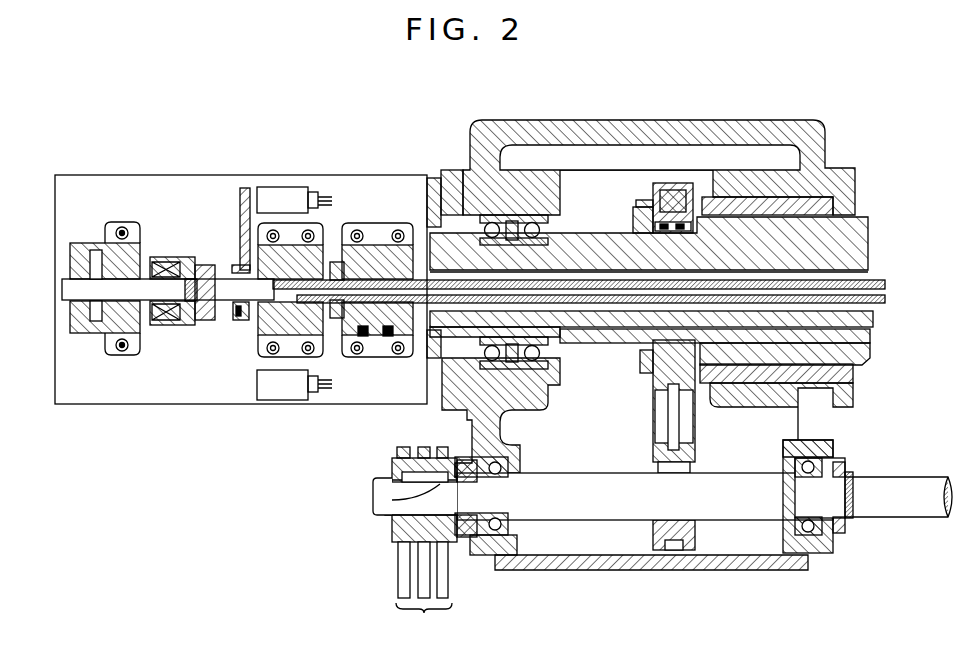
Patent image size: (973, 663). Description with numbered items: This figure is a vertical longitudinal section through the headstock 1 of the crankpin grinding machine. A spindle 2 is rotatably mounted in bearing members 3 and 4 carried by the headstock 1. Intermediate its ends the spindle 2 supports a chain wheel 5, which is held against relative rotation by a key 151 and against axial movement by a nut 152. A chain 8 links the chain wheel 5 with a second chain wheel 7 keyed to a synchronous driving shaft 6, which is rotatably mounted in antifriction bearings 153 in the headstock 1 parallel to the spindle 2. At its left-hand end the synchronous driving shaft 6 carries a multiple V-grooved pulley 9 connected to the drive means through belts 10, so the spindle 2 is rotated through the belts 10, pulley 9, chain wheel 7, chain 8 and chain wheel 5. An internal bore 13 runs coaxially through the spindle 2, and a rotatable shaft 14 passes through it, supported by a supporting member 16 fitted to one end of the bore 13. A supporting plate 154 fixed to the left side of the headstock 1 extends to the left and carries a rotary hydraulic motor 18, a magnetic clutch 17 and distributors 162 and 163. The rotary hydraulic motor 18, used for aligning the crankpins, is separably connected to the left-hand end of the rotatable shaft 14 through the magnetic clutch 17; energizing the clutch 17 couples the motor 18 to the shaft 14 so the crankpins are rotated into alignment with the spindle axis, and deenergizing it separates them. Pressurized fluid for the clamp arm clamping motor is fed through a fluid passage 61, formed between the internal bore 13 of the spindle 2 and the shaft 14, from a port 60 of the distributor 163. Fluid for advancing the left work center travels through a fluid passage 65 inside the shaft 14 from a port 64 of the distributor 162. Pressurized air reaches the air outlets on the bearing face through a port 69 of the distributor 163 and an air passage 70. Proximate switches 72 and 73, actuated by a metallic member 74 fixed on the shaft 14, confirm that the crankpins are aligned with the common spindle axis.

The headstock 1 is at (695, 122).
The spindle 2 is at (850, 246).
The bearing member 3 is at (773, 197).
The bearing member 4 is at (495, 222).
The chain wheel 5 is at (660, 186).
The synchronous driving shaft 6 is at (598, 485).
The chain wheel 7 is at (655, 530).
The chain 8 is at (690, 426).
The multiple V-grooved pulley 9 is at (392, 525).
The belts 10 is at (424, 589).
The internal bore 13 is at (868, 278).
The rotatable shaft 14 is at (582, 346).
The supporting member 16 is at (424, 245).
The magnetic clutch 17 is at (185, 262).
The rotary hydraulic motor 18 is at (95, 333).
The port 60 is at (363, 338).
The fluid passage 61 is at (573, 276).
The port 64 is at (248, 322).
The fluid passage 65 is at (606, 290).
The port 69 is at (388, 338).
The air passage 70 is at (605, 332).
The proximate switch 72 is at (290, 188).
The proximate switch 73 is at (285, 398).
The metallic member 74 is at (240, 205).
The key 151 is at (692, 190).
The nut 152 is at (643, 212).
The antifriction bearings 153 is at (800, 556).
The supporting plate 154 is at (135, 185).
The distributor 162 is at (258, 345).
The distributor 163 is at (383, 225).